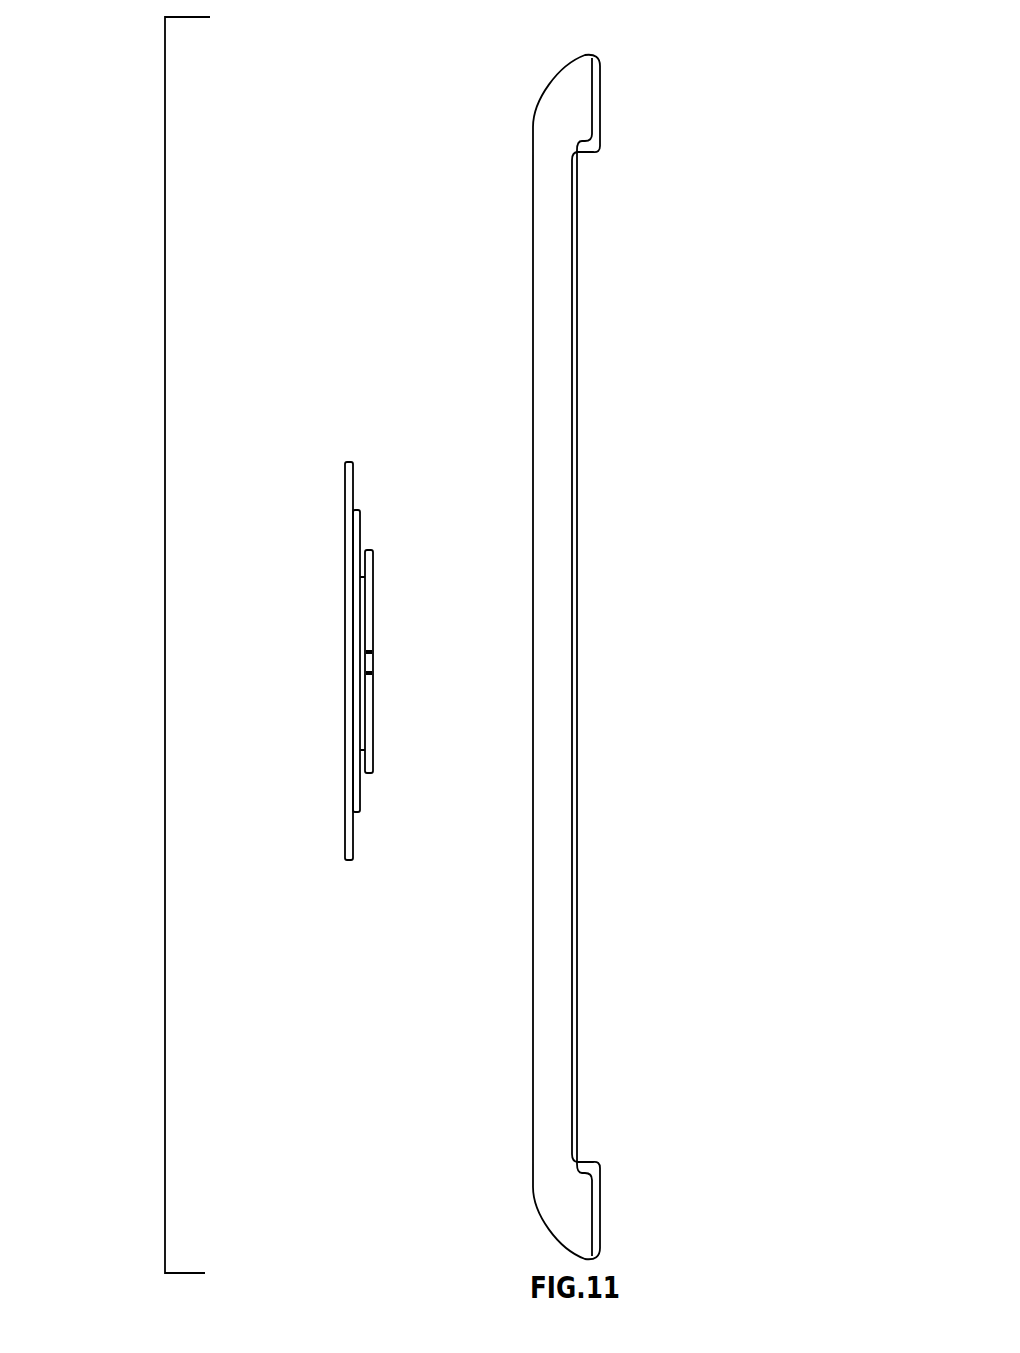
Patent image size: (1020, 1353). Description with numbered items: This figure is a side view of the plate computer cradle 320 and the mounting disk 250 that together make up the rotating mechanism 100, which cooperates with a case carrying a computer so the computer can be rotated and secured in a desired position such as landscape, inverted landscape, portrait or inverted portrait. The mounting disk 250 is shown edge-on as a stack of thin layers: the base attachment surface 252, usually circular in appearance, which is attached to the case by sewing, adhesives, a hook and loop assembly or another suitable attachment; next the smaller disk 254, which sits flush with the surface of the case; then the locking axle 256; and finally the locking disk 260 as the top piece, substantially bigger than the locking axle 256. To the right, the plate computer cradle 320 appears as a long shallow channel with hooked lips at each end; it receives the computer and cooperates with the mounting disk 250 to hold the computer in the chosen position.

The rotating mechanism 100 is at (165, 142).
The mounting disk 250 is at (359, 645).
The base attachment surface 252 is at (353, 490).
The smaller disk 254 is at (358, 548).
The locking axle 256 is at (363, 708).
The locking disk 260 is at (370, 762).
The plate computer cradle 320 is at (657, 573).